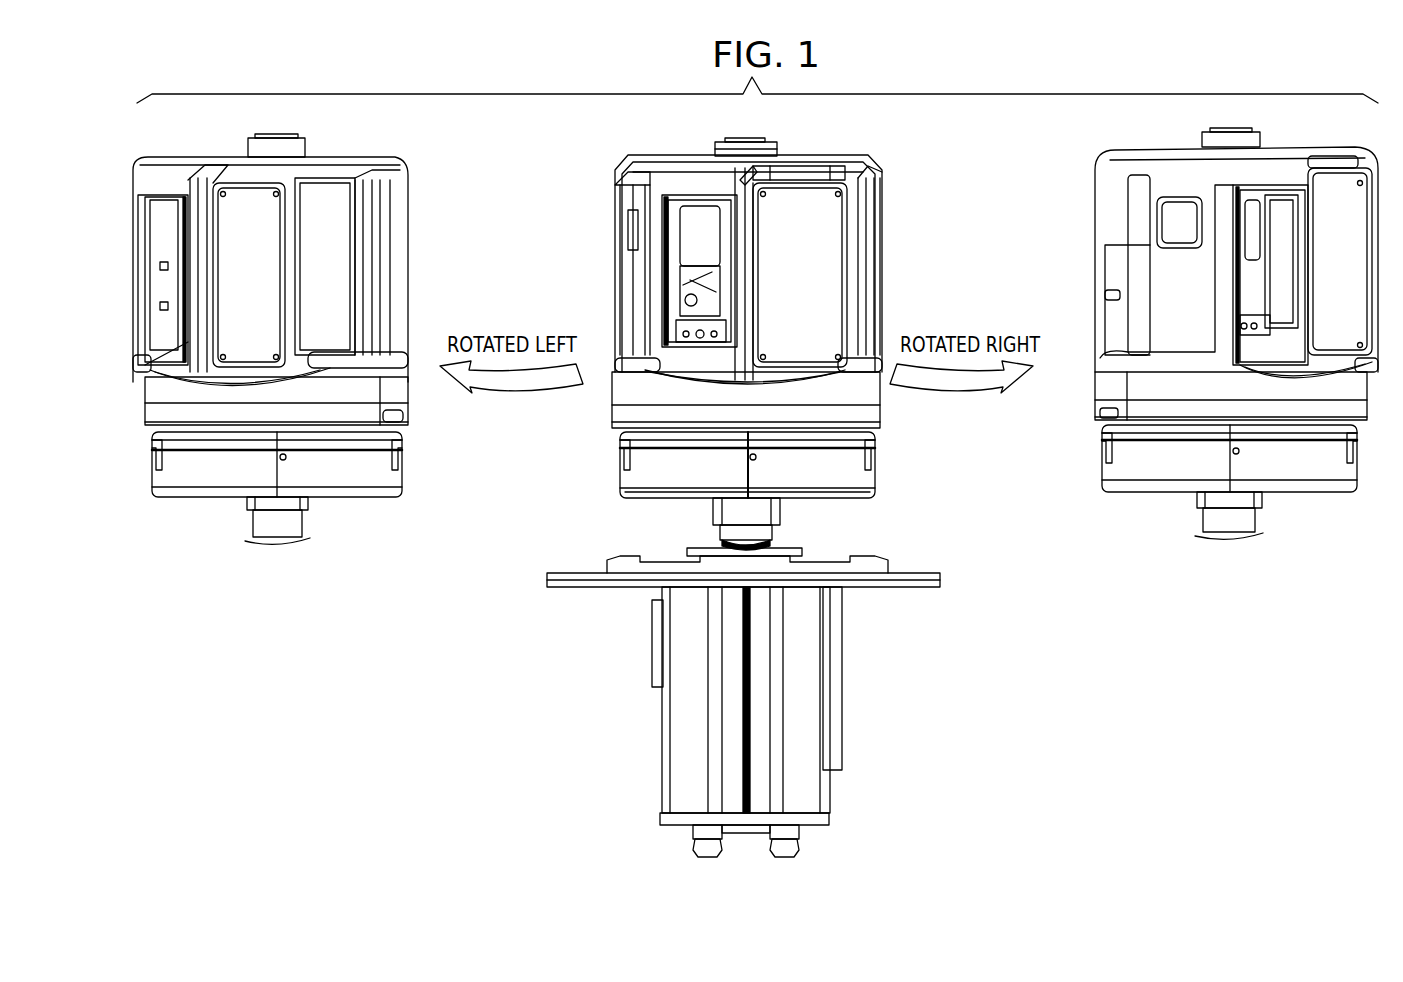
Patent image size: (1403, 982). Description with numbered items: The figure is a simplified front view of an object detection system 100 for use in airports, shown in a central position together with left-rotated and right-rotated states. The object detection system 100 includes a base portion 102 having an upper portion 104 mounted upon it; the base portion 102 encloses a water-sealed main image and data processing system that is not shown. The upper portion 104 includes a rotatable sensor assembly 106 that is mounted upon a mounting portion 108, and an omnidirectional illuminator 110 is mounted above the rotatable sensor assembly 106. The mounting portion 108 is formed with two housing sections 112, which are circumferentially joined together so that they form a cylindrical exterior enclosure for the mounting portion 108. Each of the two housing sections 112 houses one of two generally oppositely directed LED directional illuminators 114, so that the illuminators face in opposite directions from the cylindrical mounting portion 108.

The object detection system 100 is at (615, 140).
The base portion 102 is at (875, 712).
The upper portion 104 is at (890, 275).
The rotatable sensor assembly 106 is at (415, 157).
The mounting portion 108 is at (887, 482).
The omnidirectional illuminator 110 is at (769, 141).
The housing sections 112 is at (662, 475).
The LED directional illuminators 114 is at (623, 456).